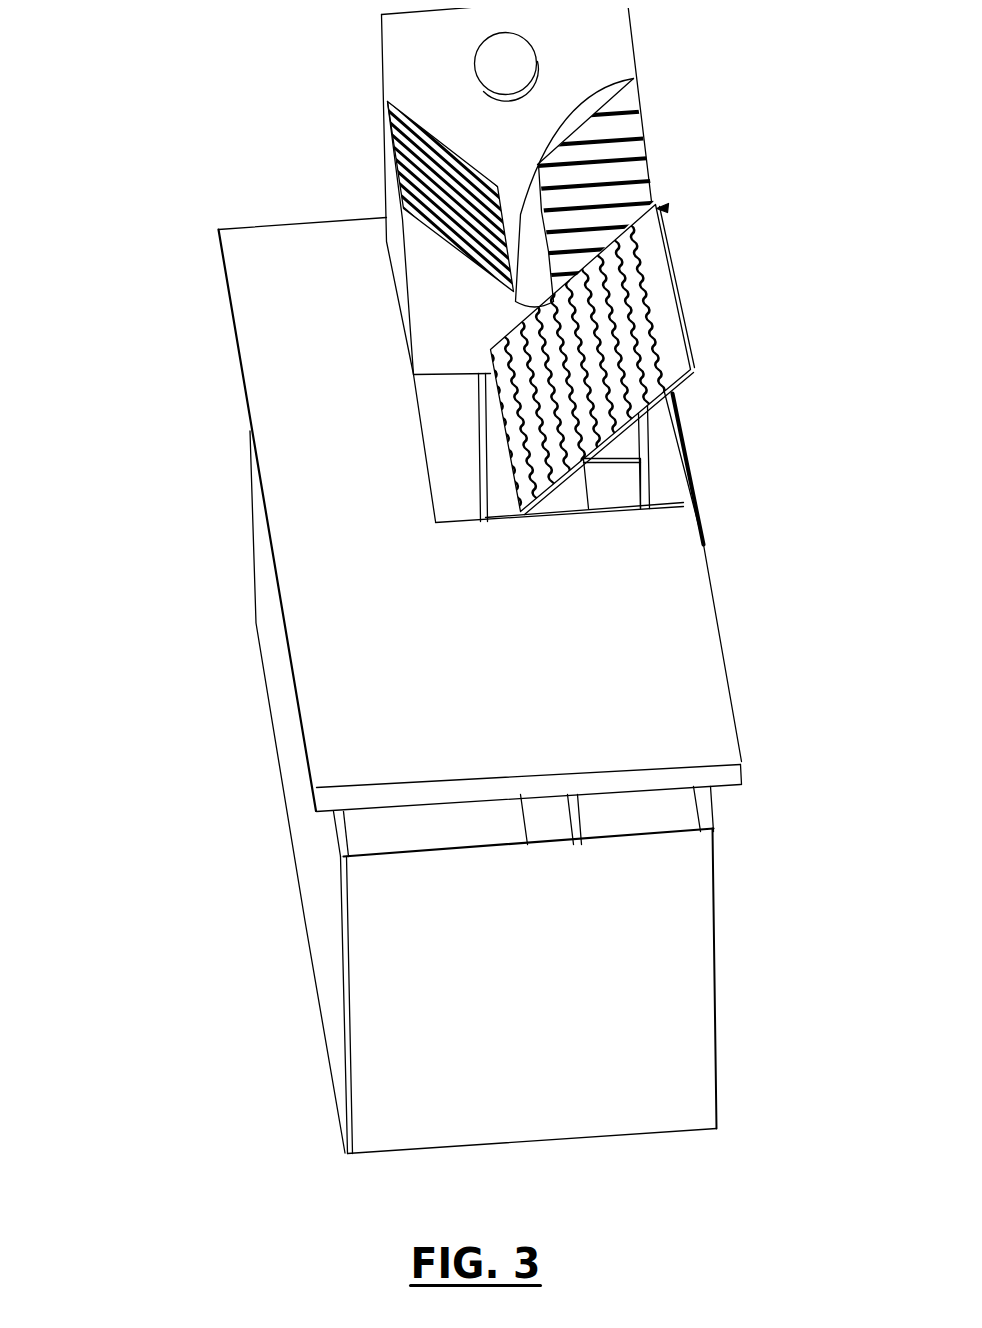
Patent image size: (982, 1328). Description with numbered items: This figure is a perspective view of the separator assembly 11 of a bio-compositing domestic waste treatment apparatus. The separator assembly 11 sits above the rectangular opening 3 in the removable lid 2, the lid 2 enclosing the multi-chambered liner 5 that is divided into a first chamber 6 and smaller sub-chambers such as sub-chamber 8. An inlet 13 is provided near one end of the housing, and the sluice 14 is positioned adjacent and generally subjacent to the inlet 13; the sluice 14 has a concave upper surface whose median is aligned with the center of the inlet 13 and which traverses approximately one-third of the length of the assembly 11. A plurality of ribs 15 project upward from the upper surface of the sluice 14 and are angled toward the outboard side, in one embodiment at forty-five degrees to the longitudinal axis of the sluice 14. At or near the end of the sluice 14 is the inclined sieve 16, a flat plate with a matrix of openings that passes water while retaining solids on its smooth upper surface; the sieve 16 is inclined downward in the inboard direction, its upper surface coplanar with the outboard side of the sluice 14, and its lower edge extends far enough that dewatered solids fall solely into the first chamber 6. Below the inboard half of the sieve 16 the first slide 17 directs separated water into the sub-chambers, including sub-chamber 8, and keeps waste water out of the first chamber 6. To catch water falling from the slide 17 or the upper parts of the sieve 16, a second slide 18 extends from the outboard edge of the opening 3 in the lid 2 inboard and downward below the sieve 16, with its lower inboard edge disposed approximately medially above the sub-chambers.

The removable lid 2 is at (367, 653).
The rectangular opening 3 is at (432, 476).
The multi-chambered liner 5 is at (322, 853).
The first chamber 6 is at (458, 477).
The sub-chamber 8 is at (618, 438).
The separator assembly 11 is at (662, 206).
The inlet 13 is at (500, 62).
The sluice 14 is at (633, 75).
The ribs 15 is at (653, 173).
The inclined sieve 16 is at (640, 307).
The first slide 17 is at (597, 512).
The second slide 18 is at (567, 495).